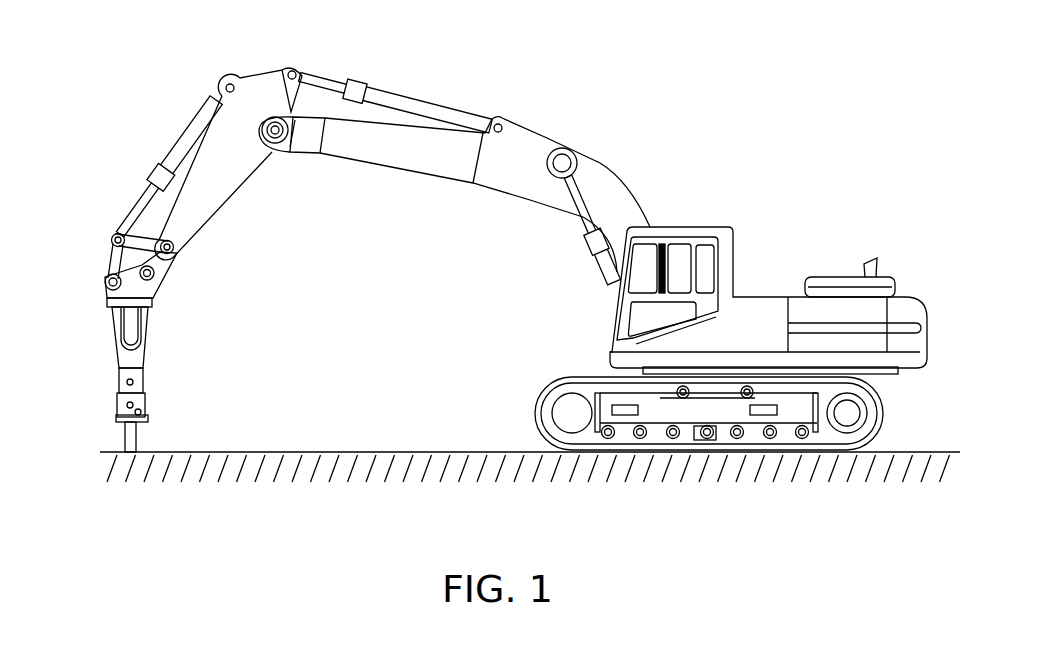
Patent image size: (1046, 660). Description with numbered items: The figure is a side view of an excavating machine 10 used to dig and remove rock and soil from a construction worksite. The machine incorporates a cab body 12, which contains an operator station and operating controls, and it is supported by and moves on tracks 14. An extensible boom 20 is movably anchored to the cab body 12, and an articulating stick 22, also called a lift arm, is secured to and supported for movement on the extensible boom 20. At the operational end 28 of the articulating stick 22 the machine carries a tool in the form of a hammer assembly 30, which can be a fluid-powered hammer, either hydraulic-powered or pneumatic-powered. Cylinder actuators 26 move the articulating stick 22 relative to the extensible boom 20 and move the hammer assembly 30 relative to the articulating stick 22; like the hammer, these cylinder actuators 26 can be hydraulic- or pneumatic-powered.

The excavating machine 10 is at (836, 204).
The cab body 12 is at (673, 227).
The tracks 14 is at (883, 403).
The extensible boom 20 is at (413, 150).
The articulating stick 22 is at (210, 188).
The cylinder actuators 26 is at (190, 132).
The operational end 28 is at (157, 260).
The hammer assembly 30 is at (102, 396).